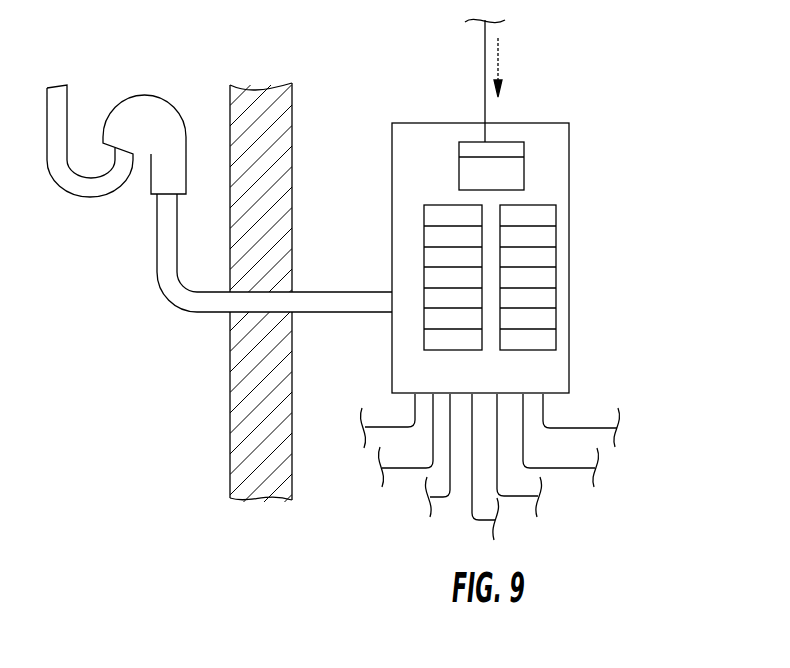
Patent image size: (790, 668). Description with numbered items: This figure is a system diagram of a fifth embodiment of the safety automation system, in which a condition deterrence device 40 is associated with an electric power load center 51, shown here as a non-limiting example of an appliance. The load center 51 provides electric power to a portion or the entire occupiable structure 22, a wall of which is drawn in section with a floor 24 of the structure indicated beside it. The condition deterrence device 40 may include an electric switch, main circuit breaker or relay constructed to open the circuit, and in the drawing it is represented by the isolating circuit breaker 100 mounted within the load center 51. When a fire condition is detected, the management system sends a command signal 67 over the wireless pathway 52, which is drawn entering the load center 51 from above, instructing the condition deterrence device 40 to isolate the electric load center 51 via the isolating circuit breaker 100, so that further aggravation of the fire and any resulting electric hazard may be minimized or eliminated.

The occupiable structure 22 is at (293, 127).
The floor 24 is at (350, 230).
The condition deterrence device 40 is at (532, 165).
The electric power load center 51 is at (570, 253).
The wireless pathway 52 is at (485, 68).
The command signal 67 is at (500, 62).
The isolating circuit breaker 100 is at (526, 165).